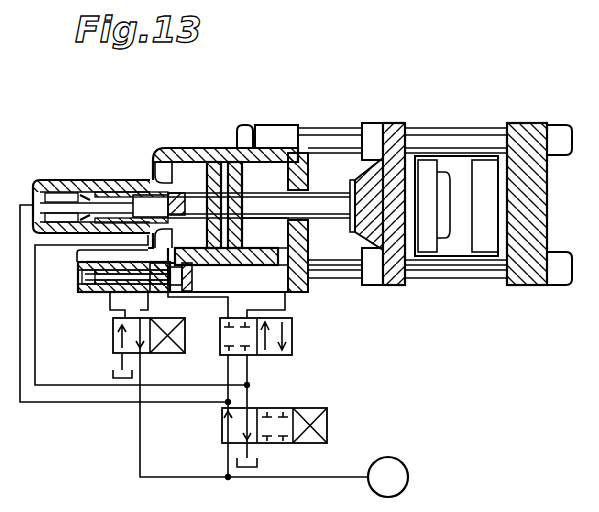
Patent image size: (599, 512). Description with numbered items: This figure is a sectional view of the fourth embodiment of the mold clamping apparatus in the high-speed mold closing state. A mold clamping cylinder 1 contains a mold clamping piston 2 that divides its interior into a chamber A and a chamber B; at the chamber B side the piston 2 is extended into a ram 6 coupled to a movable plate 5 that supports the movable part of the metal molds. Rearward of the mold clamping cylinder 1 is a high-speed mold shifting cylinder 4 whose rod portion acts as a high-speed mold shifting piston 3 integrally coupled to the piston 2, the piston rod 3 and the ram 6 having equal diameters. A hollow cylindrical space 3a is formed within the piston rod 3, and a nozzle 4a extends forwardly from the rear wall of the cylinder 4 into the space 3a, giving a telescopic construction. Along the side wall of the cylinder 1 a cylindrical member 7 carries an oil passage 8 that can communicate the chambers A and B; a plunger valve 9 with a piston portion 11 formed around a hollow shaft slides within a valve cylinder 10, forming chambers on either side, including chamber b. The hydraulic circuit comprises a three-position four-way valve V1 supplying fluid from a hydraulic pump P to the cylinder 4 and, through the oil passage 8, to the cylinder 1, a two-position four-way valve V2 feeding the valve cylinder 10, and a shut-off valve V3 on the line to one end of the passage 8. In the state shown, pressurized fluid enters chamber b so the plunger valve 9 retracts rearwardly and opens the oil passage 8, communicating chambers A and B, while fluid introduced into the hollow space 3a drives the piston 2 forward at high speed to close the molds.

The mold clamping cylinder 1 is at (170, 157).
The mold clamping piston 2 is at (223, 175).
The high-speed mold shifting piston 3 is at (110, 180).
The hollow cylindrical space 3a is at (143, 197).
The high-speed mold shifting cylinder 4 is at (75, 180).
The nozzle 4a is at (50, 180).
The movable plate 5 is at (393, 163).
The ram 6 is at (333, 195).
The cylindrical member 7 is at (297, 288).
The oil passage 8 is at (267, 278).
The plunger valve 9 is at (160, 297).
The valve cylinder 10 is at (80, 288).
The piston portion 11 is at (112, 308).
The chamber A is at (188, 170).
The chamber B is at (268, 173).
The chamber b is at (78, 262).
The three-position four-way valve V1 is at (327, 430).
The two-position four-way valve V2 is at (112, 340).
The shut-off valve V3 is at (292, 348).
The hydraulic pump P is at (388, 477).